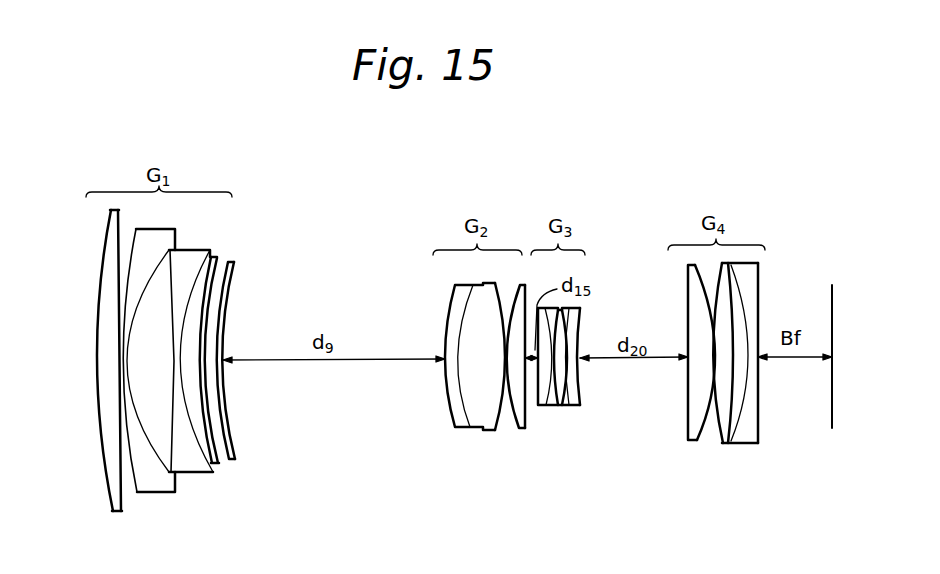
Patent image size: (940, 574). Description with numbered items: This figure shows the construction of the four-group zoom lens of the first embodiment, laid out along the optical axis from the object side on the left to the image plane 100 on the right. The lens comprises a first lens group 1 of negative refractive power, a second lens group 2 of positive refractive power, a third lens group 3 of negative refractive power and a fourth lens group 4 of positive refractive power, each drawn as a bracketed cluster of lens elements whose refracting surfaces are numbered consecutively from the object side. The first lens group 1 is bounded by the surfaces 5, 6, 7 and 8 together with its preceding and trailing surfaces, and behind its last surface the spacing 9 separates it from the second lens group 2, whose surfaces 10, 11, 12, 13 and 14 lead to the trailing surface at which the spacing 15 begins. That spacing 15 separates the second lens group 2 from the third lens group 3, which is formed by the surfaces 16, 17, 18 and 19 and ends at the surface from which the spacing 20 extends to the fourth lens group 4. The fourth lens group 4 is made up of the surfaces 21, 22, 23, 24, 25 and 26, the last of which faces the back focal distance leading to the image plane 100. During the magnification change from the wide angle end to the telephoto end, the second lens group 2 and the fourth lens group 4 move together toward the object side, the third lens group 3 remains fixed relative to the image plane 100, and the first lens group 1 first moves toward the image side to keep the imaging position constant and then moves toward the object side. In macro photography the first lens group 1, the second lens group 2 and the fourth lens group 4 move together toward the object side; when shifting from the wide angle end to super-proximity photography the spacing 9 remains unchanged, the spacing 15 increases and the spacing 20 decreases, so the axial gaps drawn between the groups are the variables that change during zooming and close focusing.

The first lens group 1 is at (108, 500).
The second lens group 2 is at (123, 511).
The third lens group 3 is at (135, 493).
The fourth lens group 4 is at (167, 474).
The lens surface r5 5 is at (178, 460).
The lens surface r6 6 is at (209, 460).
The lens surface r7 7 is at (220, 462).
The lens surface r8 8 is at (232, 440).
The spacing d9 9 is at (235, 438).
The lens surface r10 10 is at (452, 412).
The lens surface r11 11 is at (470, 427).
The lens surface r12 12 is at (487, 424).
The lens surface r13 13 is at (518, 428).
The lens surface r14 14 is at (524, 430).
The spacing d15 15 is at (534, 407).
The lens surface r16 16 is at (540, 406).
The lens surface r17 17 is at (553, 406).
The lens surface r18 18 is at (573, 406).
The lens surface r19 19 is at (582, 404).
The spacing d20 20 is at (580, 378).
The lens surface r21 21 is at (687, 427).
The lens surface r22 22 is at (701, 437).
The lens surface r23 23 is at (722, 428).
The lens surface r24 24 is at (730, 440).
The lens surface r25 25 is at (736, 436).
The lens surface r26 26 is at (760, 426).
The image plane 100 is at (834, 296).